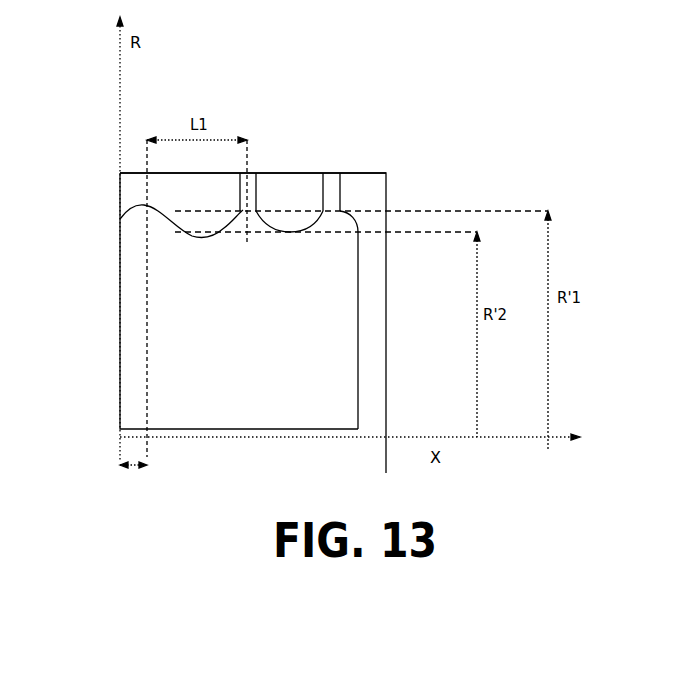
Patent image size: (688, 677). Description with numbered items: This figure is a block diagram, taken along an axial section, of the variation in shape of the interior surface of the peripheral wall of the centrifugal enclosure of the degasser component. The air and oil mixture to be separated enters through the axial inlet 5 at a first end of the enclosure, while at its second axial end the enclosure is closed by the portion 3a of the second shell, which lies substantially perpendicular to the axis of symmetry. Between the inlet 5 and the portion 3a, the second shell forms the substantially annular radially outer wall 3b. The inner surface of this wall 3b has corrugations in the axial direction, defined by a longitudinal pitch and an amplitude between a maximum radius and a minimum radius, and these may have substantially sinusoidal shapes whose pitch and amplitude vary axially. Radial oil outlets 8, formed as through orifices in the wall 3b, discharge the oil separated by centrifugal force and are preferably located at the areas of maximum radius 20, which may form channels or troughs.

The axial inlet 5 is at (136, 372).
The portion of the second shell 3a is at (370, 390).
The radially outer wall 3b is at (283, 173).
The radial oil outlets 8 is at (248, 216).
The areas of maximum radius 20 is at (136, 229).